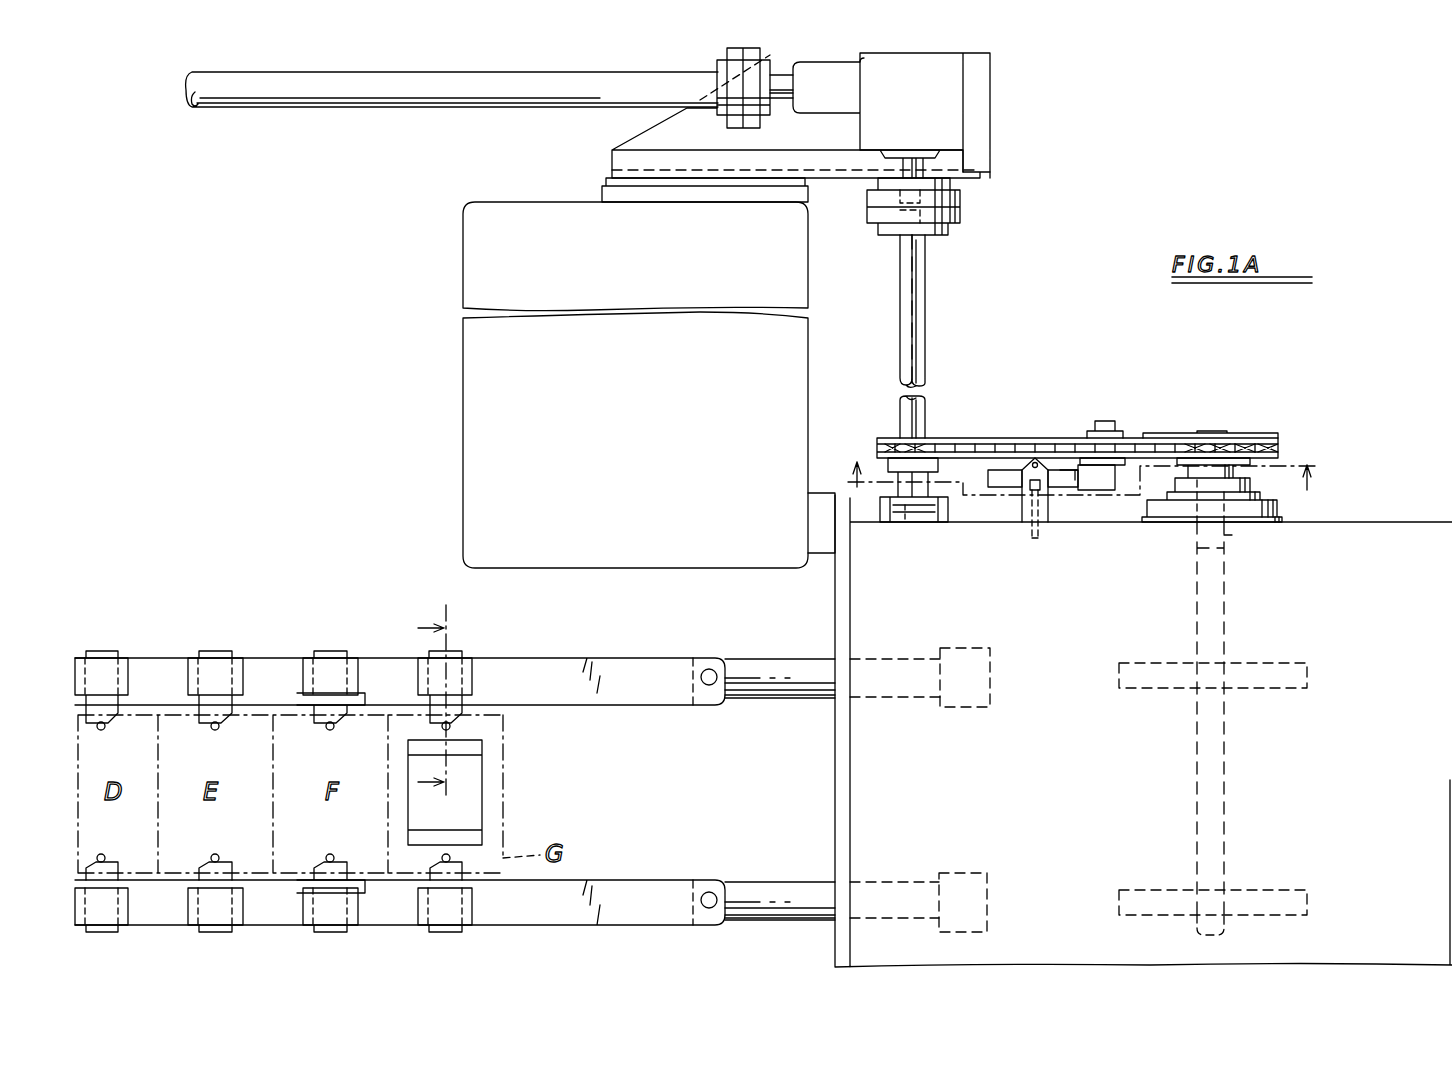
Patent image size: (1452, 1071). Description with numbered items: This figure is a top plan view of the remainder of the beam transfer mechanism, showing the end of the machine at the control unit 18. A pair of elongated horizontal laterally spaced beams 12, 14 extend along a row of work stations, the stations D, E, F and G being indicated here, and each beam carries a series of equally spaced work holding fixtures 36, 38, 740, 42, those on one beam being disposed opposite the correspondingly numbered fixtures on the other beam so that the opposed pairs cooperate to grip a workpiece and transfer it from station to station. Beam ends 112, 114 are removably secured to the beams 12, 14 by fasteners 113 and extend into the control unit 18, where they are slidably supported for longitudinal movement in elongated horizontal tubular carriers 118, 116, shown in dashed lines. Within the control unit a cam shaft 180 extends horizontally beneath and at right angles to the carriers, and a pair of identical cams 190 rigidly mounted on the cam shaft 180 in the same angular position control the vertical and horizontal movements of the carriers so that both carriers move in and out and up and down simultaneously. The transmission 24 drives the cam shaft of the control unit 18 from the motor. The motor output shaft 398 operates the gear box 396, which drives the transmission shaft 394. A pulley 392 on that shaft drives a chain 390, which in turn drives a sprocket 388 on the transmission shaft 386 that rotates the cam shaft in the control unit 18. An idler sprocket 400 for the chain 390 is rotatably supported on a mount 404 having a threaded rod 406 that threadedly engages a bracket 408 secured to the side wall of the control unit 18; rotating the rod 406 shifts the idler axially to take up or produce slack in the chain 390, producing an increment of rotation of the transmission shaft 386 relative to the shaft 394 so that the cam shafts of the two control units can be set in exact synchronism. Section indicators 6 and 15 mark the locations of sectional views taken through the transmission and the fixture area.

The motor output shaft 398 is at (262, 99).
The gear box 396 is at (948, 126).
The transmission 24 is at (974, 225).
The transmission shaft 394 is at (915, 363).
The pulley 392 is at (880, 436).
The chain 390 is at (1038, 412).
The idler sprocket 400 is at (1122, 435).
The sprocket 388 is at (1257, 435).
The transmission shaft 386 is at (1232, 537).
The threaded rod 406 is at (1010, 478).
The bracket 408 is at (1048, 500).
The mount 404 is at (1097, 477).
The section line 6- 6 is at (1081, 477).
The section line 15- 15 is at (429, 703).
The work holding fixture 36 is at (125, 928).
The work holding fixture 38 is at (236, 928).
The work holding fixture 740 is at (366, 946).
The work holding fixture 42 is at (466, 928).
The beam 12 is at (641, 665).
The beam 14 is at (648, 917).
The fastener 113 is at (709, 893).
The beam end 112 is at (773, 665).
The beam end 114 is at (775, 912).
The tubular carrier 118 is at (990, 686).
The tubular carrier 116 is at (985, 875).
The cam 190 is at (1300, 900).
The cam shaft 180 is at (1190, 776).
The control unit 18 is at (1254, 707).